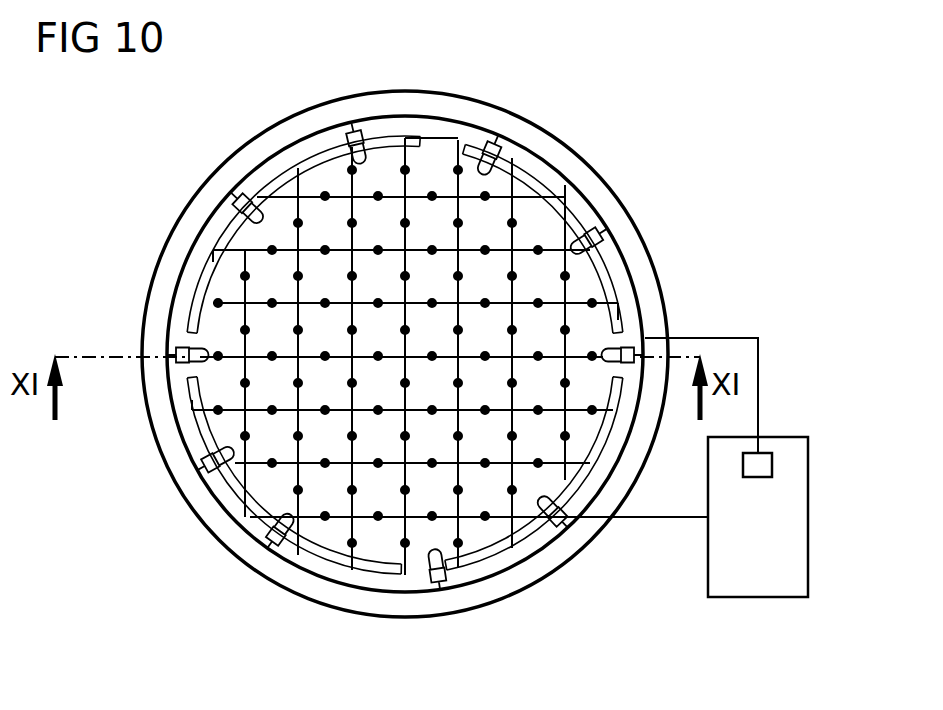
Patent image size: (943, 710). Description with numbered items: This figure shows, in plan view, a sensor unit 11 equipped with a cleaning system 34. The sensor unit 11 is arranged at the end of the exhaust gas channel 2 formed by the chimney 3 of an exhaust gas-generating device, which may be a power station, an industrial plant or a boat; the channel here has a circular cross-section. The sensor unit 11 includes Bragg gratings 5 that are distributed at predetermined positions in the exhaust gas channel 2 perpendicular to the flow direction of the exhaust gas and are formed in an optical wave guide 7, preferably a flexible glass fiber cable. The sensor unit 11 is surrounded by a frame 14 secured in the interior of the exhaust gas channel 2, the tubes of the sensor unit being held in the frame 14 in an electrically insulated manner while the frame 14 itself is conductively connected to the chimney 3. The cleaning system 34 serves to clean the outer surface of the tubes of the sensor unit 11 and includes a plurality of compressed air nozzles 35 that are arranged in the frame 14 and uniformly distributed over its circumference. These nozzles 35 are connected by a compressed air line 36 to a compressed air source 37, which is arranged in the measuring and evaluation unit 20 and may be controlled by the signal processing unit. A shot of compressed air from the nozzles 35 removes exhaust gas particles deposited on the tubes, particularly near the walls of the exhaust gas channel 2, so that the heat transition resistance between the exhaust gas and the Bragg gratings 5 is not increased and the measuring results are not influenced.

The exhaust gas channel 2 is at (205, 462).
The chimney 3 is at (190, 392).
The Bragg gratings 5 is at (595, 300).
The optical wave guide 7 is at (200, 328).
The sensor unit 11 is at (332, 548).
The frame 14 is at (493, 150).
The measuring and evaluation unit 20 is at (808, 522).
The cleaning system 34 is at (207, 205).
The compressed air nozzles 35 is at (443, 578).
The compressed air line 36 is at (405, 597).
The compressed air source 37 is at (772, 465).